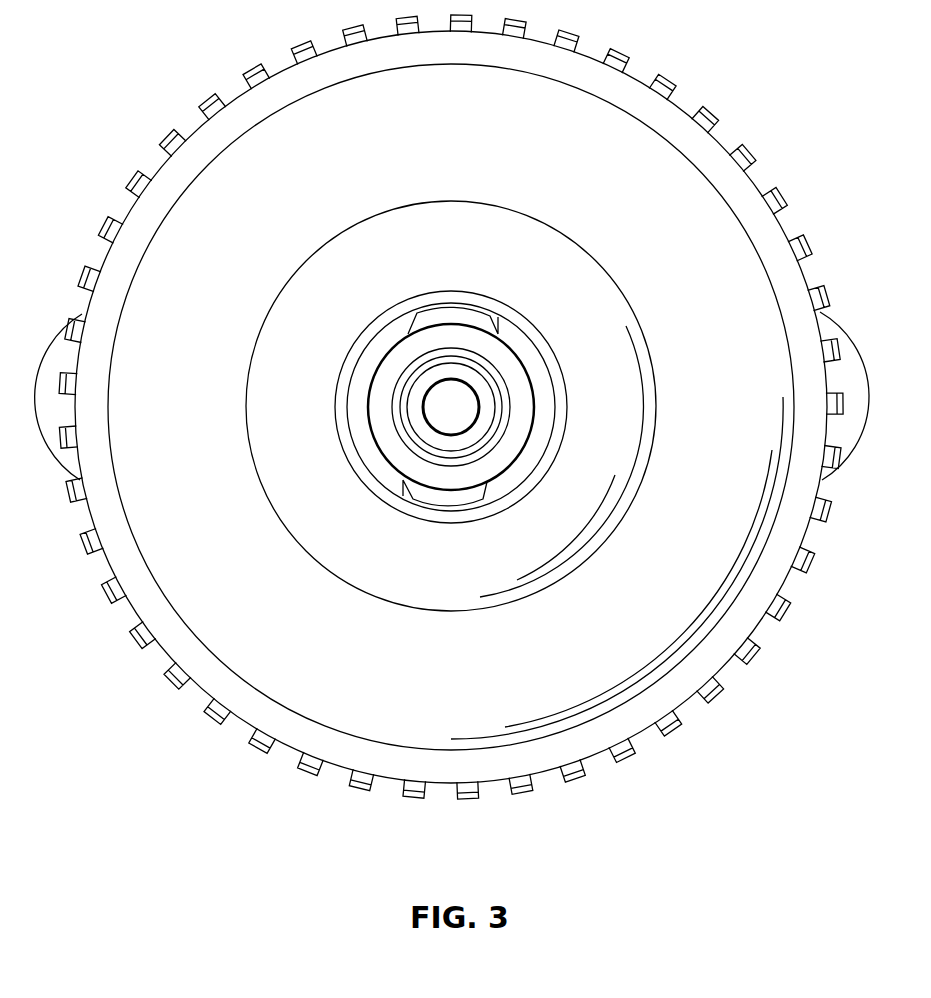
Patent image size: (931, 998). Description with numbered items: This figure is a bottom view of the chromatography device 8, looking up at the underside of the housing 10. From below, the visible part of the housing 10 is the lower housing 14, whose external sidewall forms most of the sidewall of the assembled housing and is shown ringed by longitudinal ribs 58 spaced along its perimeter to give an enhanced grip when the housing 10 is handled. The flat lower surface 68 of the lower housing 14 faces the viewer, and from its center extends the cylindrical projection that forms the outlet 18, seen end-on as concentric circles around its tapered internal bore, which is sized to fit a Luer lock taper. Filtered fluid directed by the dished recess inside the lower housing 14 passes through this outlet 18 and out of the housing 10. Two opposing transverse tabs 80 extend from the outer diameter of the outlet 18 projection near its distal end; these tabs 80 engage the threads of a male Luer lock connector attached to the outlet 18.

The chromatography device 8 is at (103, 42).
The housing 10 is at (88, 305).
The lower housing 14 is at (738, 247).
The outlet 18 is at (457, 408).
The longitudinal ribs 58 is at (782, 612).
The lower surface 68 is at (465, 114).
The transverse tabs 80 is at (466, 314).